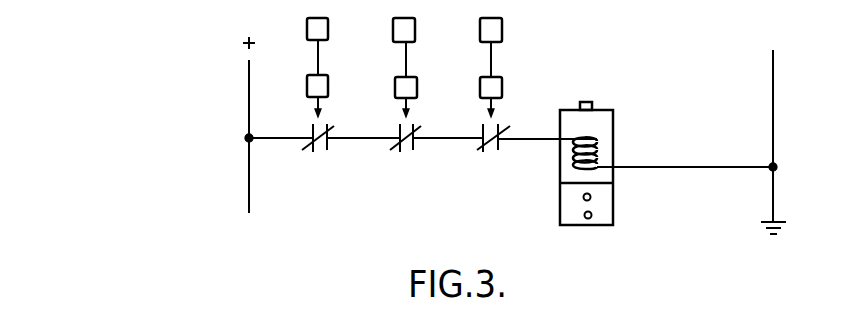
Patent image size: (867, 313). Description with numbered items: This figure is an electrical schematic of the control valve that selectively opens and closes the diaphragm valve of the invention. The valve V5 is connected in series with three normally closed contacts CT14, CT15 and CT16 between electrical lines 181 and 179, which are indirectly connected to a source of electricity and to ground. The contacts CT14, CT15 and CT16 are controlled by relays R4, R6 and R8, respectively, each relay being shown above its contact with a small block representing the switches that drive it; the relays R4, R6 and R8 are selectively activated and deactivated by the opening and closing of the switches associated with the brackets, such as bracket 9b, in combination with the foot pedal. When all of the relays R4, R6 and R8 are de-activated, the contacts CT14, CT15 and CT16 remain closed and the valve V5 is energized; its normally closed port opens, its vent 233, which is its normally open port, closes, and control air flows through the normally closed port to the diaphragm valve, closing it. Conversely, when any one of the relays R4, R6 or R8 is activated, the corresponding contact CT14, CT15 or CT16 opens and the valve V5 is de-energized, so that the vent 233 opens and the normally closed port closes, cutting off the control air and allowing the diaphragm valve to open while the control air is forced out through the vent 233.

The electrical line 181 is at (249, 109).
The bracket 9b is at (328, 30).
The relay R4 is at (328, 88).
The relay R6 is at (417, 89).
The relay R8 is at (502, 89).
The normally closed contact CT14 is at (350, 172).
The normally closed contact CT15 is at (437, 172).
The normally closed contact CT16 is at (520, 172).
The valve V5 is at (613, 215).
The vent 233 is at (592, 103).
The electrical line 179 is at (773, 110).